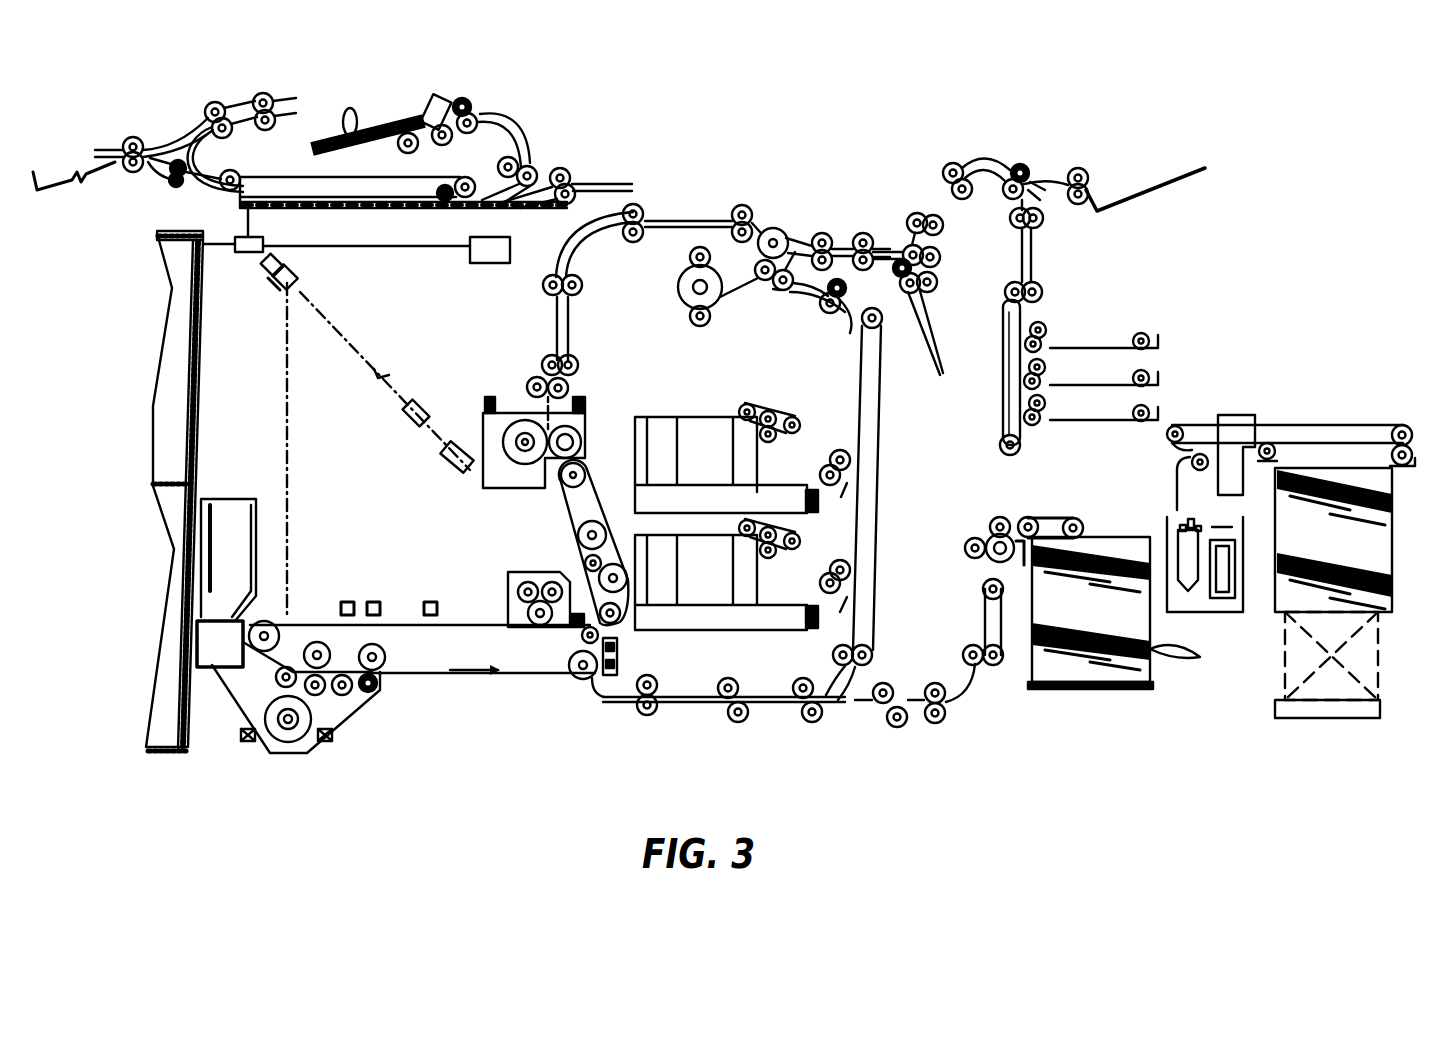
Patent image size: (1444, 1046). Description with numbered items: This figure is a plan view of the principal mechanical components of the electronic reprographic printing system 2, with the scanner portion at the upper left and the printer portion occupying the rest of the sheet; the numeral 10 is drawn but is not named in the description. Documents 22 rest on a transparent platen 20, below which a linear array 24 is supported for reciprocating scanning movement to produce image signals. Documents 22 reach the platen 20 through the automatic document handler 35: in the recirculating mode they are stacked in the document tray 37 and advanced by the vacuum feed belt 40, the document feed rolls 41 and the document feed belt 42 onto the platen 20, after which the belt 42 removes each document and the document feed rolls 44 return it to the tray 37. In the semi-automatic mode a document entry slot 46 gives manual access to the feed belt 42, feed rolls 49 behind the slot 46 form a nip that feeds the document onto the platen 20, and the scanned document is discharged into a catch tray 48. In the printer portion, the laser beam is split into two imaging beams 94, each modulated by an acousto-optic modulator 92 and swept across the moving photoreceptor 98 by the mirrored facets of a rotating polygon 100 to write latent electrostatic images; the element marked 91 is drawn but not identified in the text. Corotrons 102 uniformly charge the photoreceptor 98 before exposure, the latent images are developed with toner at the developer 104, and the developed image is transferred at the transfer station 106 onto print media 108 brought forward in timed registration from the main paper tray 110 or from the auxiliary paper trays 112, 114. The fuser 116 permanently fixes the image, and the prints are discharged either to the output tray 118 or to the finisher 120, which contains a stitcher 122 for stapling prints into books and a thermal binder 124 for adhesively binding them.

The electronic reprographic printing system 2 is at (760, 132).
The paper web supply 10 is at (161, 119).
The transparent platen 20 is at (399, 207).
The document 22 is at (350, 112).
The linear array 24 is at (247, 226).
The automatic document handler 35 is at (371, 107).
The document tray 37 is at (350, 136).
The vacuum feed belt 40 is at (452, 137).
The document feed rolls 41 is at (464, 100).
The document feed belt 42 is at (412, 175).
The document feed rolls 44 is at (266, 129).
The document entry slot 46 is at (598, 178).
The catch tray 48 is at (100, 168).
The feed rolls 49 is at (563, 168).
The optical detector 91 is at (456, 473).
The acousto-optic modulator 92 is at (423, 400).
The imaging beams 94 is at (388, 362).
The photoreceptor 98 is at (462, 620).
The rotating polygon 100 is at (278, 283).
The corotrons 102 is at (430, 602).
The developer 104 is at (356, 708).
The transfer station 106 is at (584, 706).
The print media 108 is at (1198, 657).
The main paper tray 110 is at (1083, 692).
The auxiliary paper tray 112 is at (690, 607).
The auxiliary paper tray 114 is at (692, 422).
The fuser 116 is at (601, 424).
The output tray 118 is at (1182, 187).
The finisher 120 is at (1215, 352).
The stitcher 122 is at (1247, 412).
The thermal binder 124 is at (1251, 594).